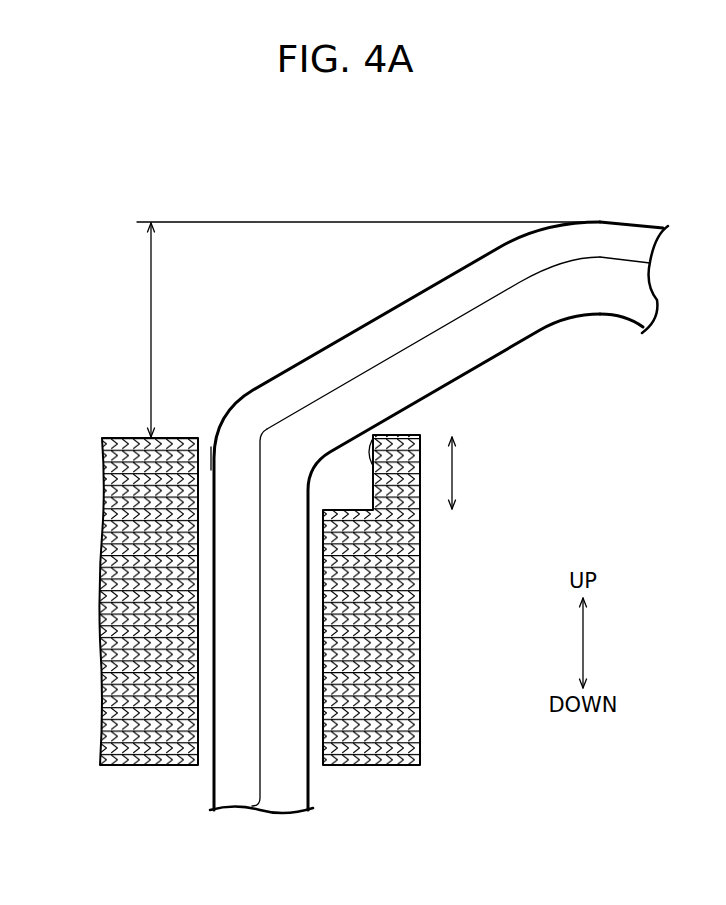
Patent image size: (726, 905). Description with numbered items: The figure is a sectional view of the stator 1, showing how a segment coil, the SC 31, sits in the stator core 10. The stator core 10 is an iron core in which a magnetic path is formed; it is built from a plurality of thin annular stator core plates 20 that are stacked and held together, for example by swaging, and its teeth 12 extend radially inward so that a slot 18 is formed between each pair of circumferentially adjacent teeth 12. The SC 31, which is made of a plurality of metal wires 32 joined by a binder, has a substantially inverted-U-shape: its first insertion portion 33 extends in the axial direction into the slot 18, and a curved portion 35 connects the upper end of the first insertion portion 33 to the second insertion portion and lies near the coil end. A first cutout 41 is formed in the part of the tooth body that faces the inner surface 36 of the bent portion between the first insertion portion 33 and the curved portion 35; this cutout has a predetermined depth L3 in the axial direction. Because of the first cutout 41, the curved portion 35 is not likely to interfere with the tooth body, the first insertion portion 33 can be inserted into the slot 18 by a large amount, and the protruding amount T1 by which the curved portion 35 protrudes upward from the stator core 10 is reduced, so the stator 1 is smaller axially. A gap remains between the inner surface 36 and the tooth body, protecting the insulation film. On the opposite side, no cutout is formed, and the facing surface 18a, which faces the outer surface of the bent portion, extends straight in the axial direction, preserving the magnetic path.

The stator 1 is at (312, 175).
The stator core 10 is at (169, 770).
The teeth 12 is at (133, 770).
The slot 18 is at (140, 597).
The facing surface 18a is at (210, 445).
The stator core plates 20 is at (414, 616).
The segment coil (SC) 31 is at (600, 220).
The metal wires 32 is at (370, 318).
The first insertion portion 33 is at (262, 609).
The curved portion 35 is at (446, 325).
The inner surface of the bent portion 36 is at (311, 467).
The first cutout 41 is at (372, 440).
The protruding amount T1 is at (133, 330).
The length (depth) of the first cutout L3 is at (470, 473).